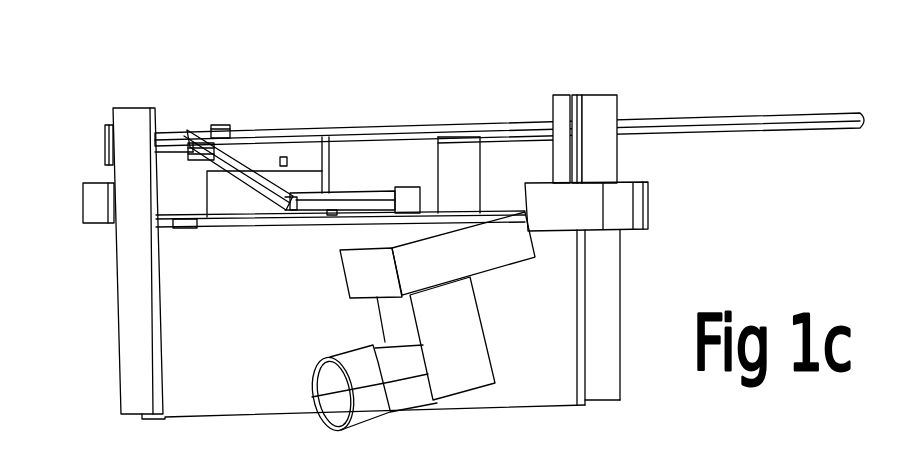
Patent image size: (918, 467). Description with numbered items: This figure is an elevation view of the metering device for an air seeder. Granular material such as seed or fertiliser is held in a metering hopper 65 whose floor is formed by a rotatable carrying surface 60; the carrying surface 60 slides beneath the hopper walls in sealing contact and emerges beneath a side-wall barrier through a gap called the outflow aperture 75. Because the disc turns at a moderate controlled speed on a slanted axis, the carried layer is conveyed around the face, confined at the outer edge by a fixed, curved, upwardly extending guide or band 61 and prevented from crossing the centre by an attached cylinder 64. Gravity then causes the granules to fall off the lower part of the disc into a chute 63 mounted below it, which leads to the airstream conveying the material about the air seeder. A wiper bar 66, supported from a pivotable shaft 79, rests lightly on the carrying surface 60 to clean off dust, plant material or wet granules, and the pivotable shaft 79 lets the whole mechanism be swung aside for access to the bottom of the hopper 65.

The carrying surface 60 is at (218, 217).
The guide or band 61 is at (650, 182).
The chute 63 is at (470, 353).
The cylinder 64 is at (440, 145).
The metering hopper 65 is at (307, 157).
The wiper bar 66 is at (400, 185).
The outflow aperture 75 is at (340, 187).
The pivotable shaft 79 is at (690, 116).